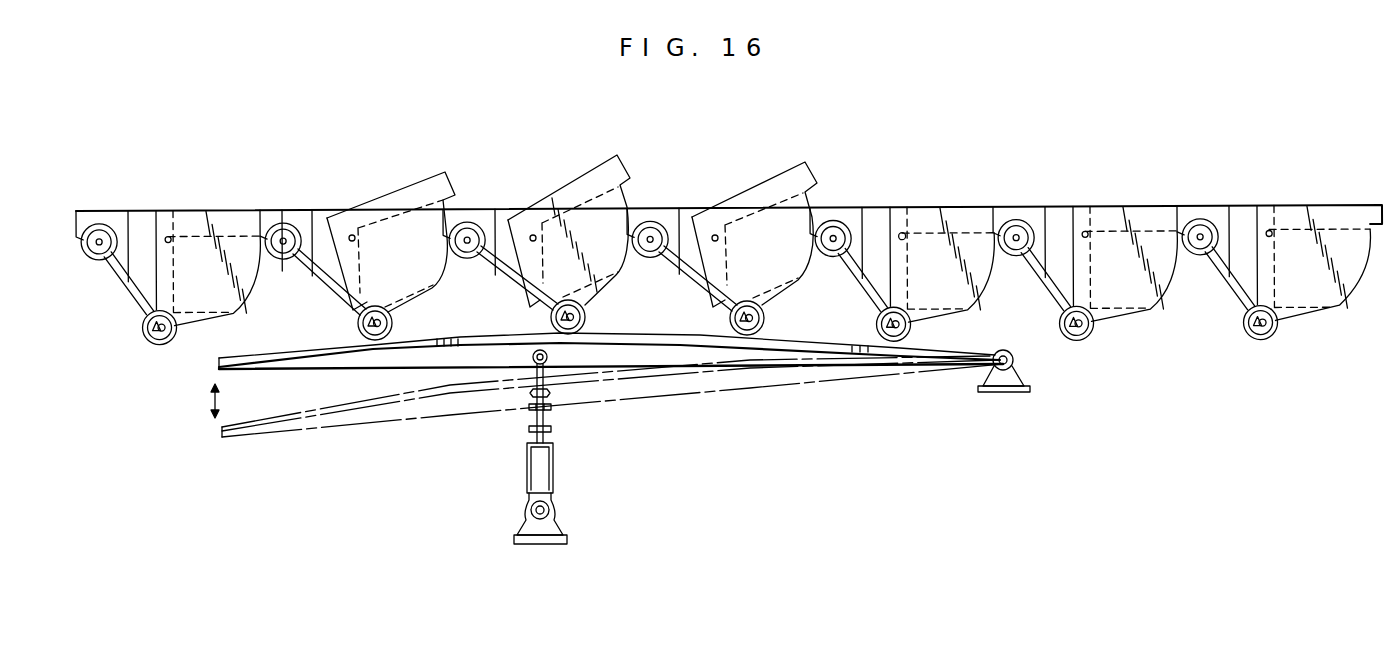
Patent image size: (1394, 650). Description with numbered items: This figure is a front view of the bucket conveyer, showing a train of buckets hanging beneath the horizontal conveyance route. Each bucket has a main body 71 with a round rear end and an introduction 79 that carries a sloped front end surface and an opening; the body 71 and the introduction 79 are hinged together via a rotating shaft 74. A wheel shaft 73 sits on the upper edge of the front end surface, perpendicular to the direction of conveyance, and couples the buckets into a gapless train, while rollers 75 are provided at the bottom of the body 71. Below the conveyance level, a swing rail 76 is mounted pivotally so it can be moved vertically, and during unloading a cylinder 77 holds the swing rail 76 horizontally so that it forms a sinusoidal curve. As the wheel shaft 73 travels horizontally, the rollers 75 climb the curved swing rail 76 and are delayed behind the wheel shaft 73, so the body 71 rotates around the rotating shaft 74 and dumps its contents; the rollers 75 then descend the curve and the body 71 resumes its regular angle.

The main body 71 is at (592, 214).
The wheel shaft 73 is at (468, 238).
The rotating shaft 74 is at (899, 233).
The rollers 75 is at (588, 322).
The swing rail 76 is at (219, 361).
The cylinder 77 is at (549, 470).
The introduction 79 is at (318, 220).